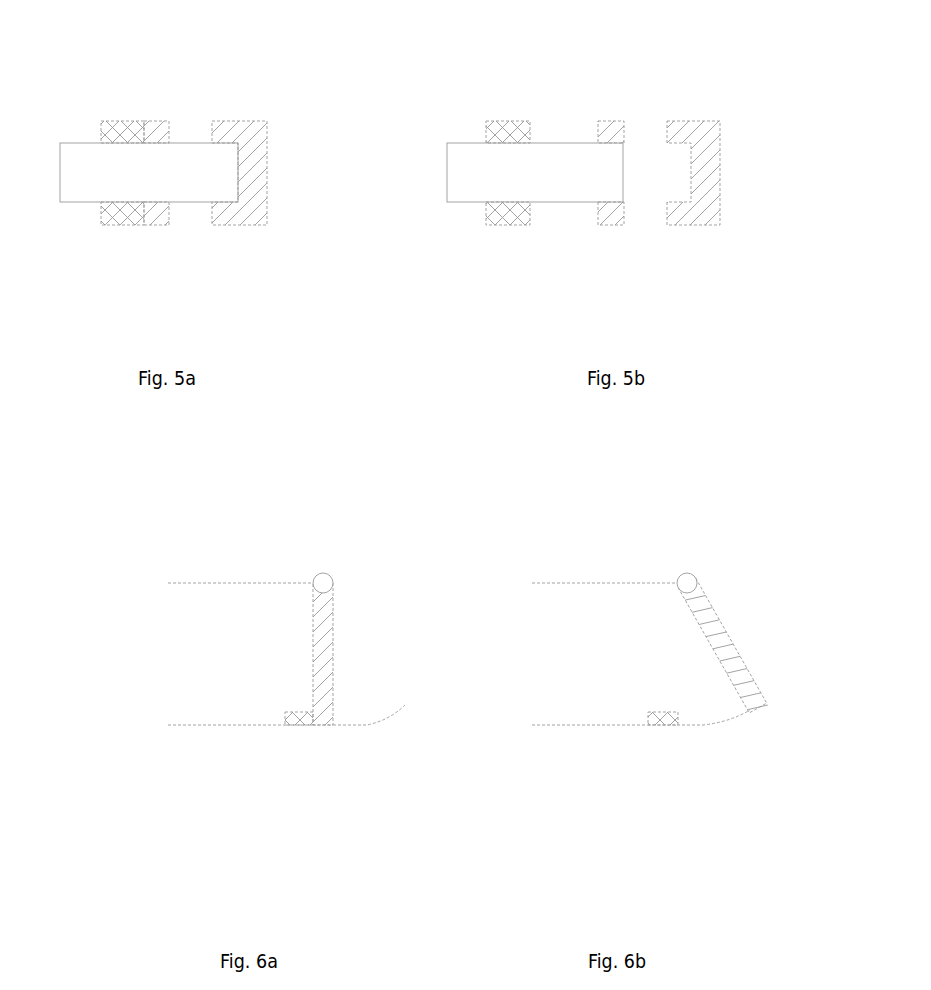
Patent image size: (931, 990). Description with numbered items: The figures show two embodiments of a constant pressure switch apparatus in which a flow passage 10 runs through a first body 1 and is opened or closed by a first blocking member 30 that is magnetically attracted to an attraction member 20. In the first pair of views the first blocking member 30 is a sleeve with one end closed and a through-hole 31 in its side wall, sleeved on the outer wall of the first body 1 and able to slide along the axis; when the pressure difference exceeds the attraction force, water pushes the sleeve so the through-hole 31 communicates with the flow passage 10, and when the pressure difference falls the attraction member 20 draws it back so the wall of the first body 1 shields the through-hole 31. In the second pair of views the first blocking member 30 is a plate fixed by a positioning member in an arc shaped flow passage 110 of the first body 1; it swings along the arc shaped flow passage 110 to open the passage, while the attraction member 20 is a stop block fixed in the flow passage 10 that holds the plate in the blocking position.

In FIG. 5A, the first body 1 is at (68, 142).
In FIG. 6A, the first body 1 is at (215, 583).
In FIG. 6B, the first body 1 is at (583, 583).
In FIG. 5A, the flow passage 10 is at (160, 167).
In FIG. 5B, the flow passage 10 is at (527, 167).
In FIG. 6A, the flow passage 10 is at (242, 663).
In FIG. 5A, the attraction member 20 is at (122, 208).
In FIG. 5B, the attraction member 20 is at (512, 210).
In FIG. 6A, the attraction member 20 is at (298, 725).
In FIG. 6B, the attraction member 20 is at (663, 720).
In FIG. 5A, the first blocking member 30 is at (163, 128).
In FIG. 5B, the first blocking member 30 is at (613, 128).
In FIG. 6A, the first blocking member 30 is at (348, 660).
In FIG. 6B, the first blocking member 30 is at (753, 655).
In FIG. 5A, the through-hole 31 is at (198, 218).
In FIG. 5B, the through-hole 31 is at (643, 220).
In FIG. 6B, the arc shaped flow passage 110 is at (748, 715).